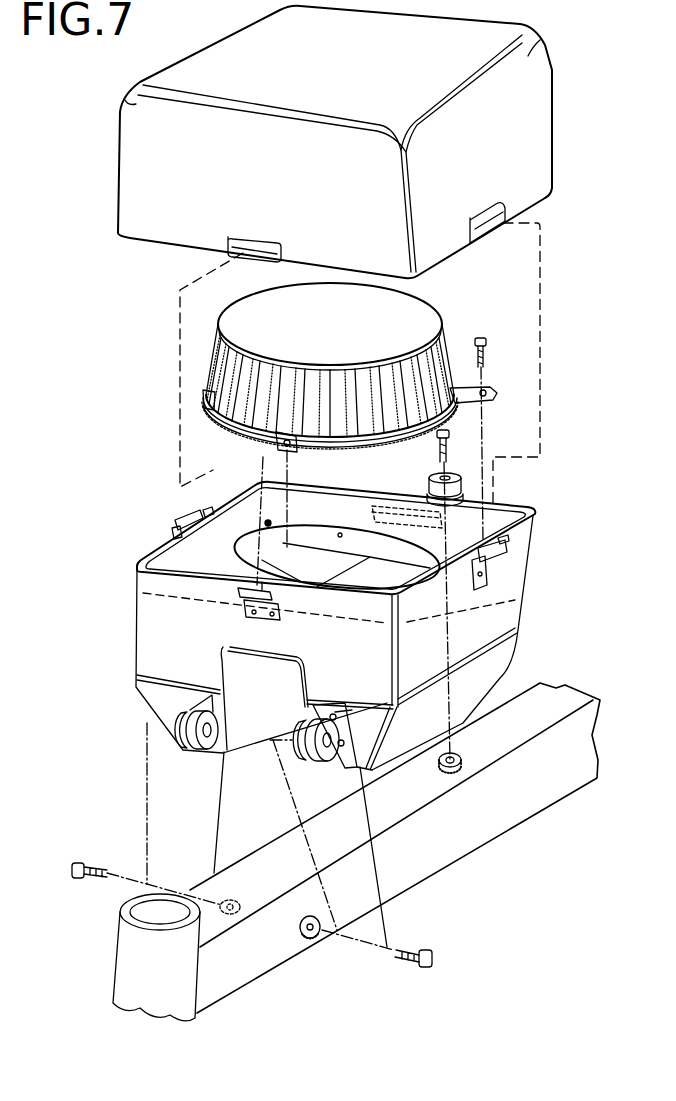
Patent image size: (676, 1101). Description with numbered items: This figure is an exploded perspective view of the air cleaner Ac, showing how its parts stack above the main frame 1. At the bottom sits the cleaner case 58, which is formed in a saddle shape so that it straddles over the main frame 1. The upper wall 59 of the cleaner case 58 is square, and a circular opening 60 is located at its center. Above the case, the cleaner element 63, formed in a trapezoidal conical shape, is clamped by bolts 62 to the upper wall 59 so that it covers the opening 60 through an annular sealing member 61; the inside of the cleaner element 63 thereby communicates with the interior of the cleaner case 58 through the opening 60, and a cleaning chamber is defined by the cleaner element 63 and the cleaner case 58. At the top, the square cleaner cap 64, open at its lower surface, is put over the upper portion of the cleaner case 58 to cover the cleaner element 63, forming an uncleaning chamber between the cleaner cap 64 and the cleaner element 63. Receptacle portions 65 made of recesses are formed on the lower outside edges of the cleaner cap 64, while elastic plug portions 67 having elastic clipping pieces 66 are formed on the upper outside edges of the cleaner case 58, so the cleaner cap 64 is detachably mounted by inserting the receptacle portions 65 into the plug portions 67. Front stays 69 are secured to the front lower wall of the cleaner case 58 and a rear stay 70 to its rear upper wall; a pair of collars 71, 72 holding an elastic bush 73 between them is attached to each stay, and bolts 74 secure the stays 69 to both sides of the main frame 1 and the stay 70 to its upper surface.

The main frame 1 is at (490, 819).
The cleaner case 58 is at (513, 603).
The upper wall 59 is at (325, 520).
The circular opening 60 is at (345, 530).
The annular sealing member 61 is at (230, 437).
The bolts 62 is at (497, 439).
The cleaner element 63 is at (442, 346).
The cleaner cap 64 is at (552, 122).
The receptacle portions 65 is at (262, 246).
The elastic clipping pieces 66 is at (178, 516).
The elastic plug portions 67 is at (208, 513).
The front stays 69 is at (205, 712).
The rear stay 70 is at (428, 493).
The collar 71 is at (323, 758).
The collar 72 is at (290, 738).
The elastic bush 73 is at (315, 749).
The bolts 74 is at (448, 447).
The air cleaner Ac is at (549, 366).